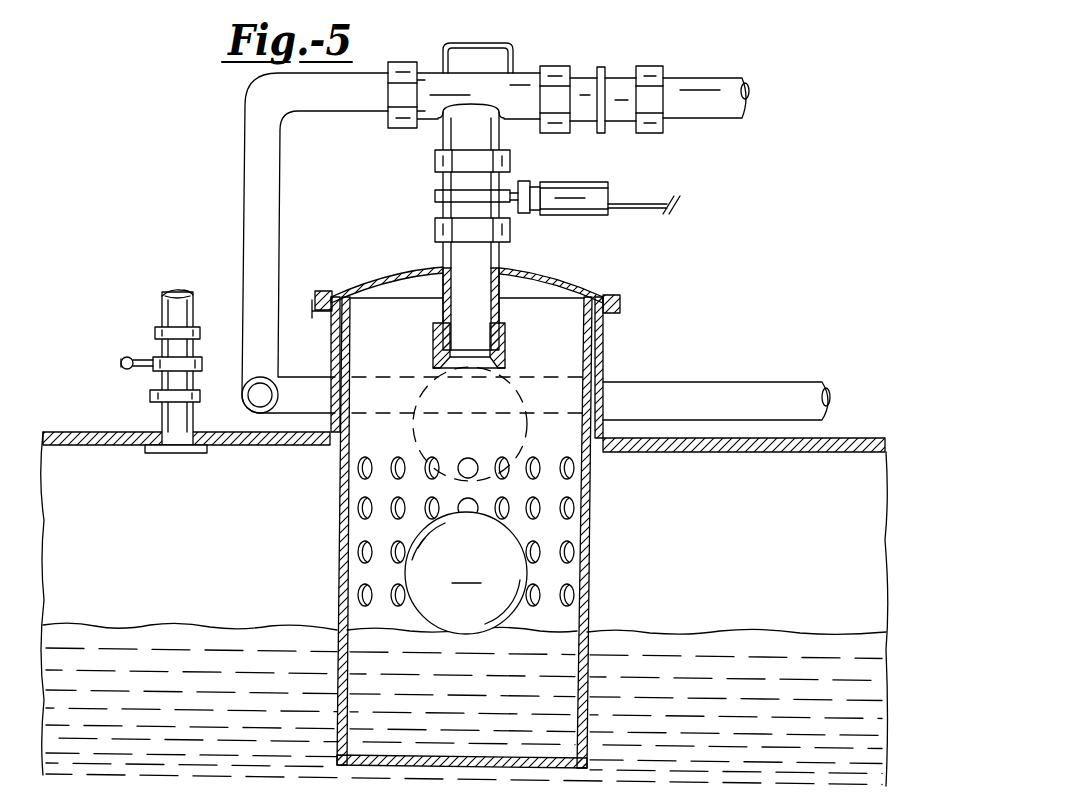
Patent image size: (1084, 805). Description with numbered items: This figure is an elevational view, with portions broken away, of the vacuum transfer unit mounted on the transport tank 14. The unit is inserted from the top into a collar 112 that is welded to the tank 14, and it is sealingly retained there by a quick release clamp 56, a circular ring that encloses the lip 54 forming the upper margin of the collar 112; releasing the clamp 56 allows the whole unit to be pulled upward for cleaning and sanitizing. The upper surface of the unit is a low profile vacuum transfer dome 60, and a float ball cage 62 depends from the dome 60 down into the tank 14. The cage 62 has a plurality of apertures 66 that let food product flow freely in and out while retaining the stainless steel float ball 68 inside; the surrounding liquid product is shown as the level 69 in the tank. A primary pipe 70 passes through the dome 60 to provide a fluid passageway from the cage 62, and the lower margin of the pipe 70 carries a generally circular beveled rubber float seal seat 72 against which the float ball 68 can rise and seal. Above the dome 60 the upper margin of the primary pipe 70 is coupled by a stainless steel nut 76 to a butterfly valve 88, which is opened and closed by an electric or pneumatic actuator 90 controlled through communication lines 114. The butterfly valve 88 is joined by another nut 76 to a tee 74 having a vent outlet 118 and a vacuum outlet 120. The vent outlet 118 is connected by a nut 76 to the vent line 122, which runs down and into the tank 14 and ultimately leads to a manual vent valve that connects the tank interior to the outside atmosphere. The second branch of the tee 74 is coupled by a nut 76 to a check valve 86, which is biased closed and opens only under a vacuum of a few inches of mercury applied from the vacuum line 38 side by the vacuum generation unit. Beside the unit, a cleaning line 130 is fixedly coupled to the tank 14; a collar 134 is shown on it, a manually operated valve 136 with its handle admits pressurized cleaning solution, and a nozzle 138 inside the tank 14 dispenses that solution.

The transport tank 14 is at (838, 438).
The vacuum line 38 is at (732, 80).
The lip 54 is at (316, 314).
The quick release clamp 56 is at (324, 292).
The vacuum transfer dome 60 is at (548, 282).
The float ball cage 62 is at (592, 625).
The apertures 66 is at (356, 546).
The float ball 68 is at (505, 378).
The water 69 is at (742, 640).
The primary pipe 70 is at (500, 263).
The float seal seat 72 is at (452, 373).
The tee 74 is at (440, 73).
The nut 76 is at (560, 67).
The check valve 86 is at (604, 70).
The butterfly valve 88 is at (436, 196).
The actuator 90 is at (585, 182).
The collar 112 is at (330, 362).
The communication lines 114 is at (652, 204).
The vent outlet 118 is at (404, 128).
The vacuum outlet 120 is at (536, 125).
The vent line 122 is at (250, 95).
The cleaning lines 130 is at (160, 300).
The valve collar 134 is at (152, 360).
The valve 136 is at (119, 368).
The nozzle 138 is at (145, 452).